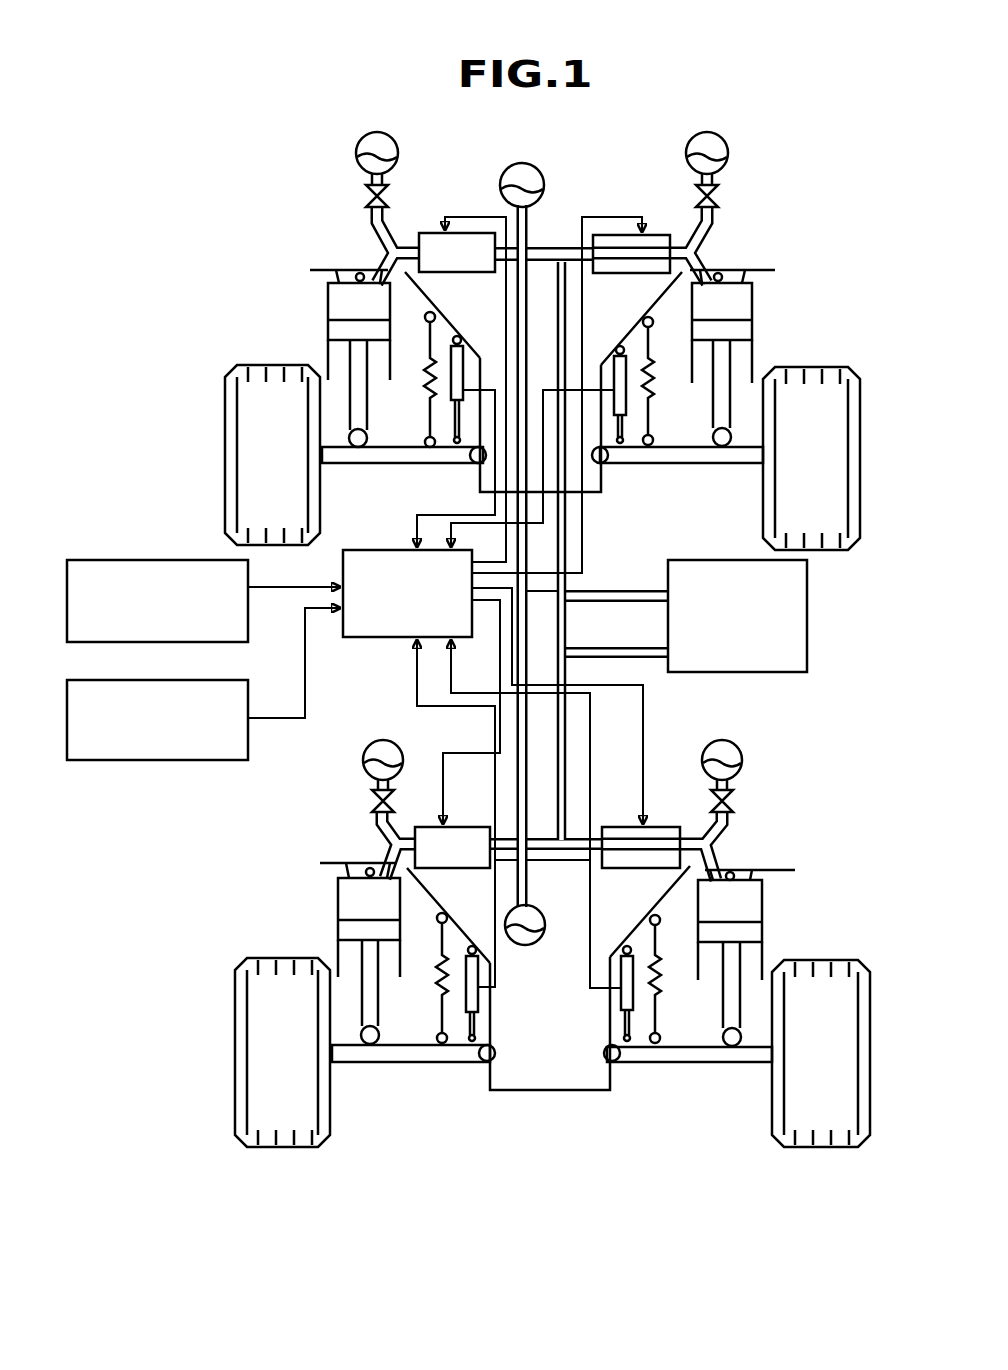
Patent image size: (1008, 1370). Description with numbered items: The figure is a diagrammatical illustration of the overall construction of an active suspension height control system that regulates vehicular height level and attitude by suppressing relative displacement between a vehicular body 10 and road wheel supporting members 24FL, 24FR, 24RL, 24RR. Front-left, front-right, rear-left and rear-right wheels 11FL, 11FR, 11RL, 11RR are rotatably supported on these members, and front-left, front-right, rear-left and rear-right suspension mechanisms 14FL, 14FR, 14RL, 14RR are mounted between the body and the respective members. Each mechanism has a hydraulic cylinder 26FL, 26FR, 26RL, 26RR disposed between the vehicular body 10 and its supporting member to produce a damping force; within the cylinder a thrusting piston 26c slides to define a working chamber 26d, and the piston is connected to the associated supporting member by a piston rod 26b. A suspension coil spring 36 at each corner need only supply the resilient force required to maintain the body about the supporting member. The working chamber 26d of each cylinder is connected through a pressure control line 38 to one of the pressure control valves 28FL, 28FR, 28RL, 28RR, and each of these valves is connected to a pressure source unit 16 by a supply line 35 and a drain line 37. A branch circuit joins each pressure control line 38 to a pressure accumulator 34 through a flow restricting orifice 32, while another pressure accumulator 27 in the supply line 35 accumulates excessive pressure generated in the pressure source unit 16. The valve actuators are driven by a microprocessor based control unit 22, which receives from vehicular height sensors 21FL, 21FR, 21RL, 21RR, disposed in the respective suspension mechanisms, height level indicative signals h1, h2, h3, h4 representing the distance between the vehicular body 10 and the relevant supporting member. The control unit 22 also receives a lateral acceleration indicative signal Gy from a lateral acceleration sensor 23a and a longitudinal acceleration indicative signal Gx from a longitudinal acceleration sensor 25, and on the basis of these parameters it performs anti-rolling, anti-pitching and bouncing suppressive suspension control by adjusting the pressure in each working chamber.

The vehicular body 10 is at (600, 493).
The front-left wheel 11FL is at (252, 433).
The front-right wheel 11FR is at (827, 413).
The rear-left wheel 11RL is at (258, 1030).
The rear-right wheel 11RR is at (832, 1105).
The front-left suspension mechanism 14FL is at (325, 300).
The front-right suspension mechanism 14FR is at (756, 302).
The rear-left suspension mechanism 14RL is at (335, 905).
The rear-right suspension mechanism 14RR is at (766, 912).
The pressure source unit 16 is at (810, 588).
The front-left vehicular height sensor 21FL is at (466, 358).
The front-right vehicular height sensor 21FR is at (600, 364).
The rear-left vehicular height sensor 21RL is at (480, 997).
The rear-right vehicular height sensor 21RR is at (614, 975).
The control unit 22 is at (377, 638).
The lateral acceleration sensor 23a is at (169, 558).
The front-left road wheel supporting member 24FL is at (417, 462).
The front-right road wheel supporting member 24FR is at (680, 466).
The rear-left road wheel supporting member 24RL is at (430, 1064).
The rear-right road wheel supporting member 24RR is at (670, 1064).
The longitudinal acceleration sensor 25 is at (191, 762).
The front-left hydraulic cylinder 26FL is at (330, 268).
The front-right hydraulic cylinder 26FR is at (742, 272).
The rear-left hydraulic cylinder 26RL is at (346, 868).
The rear-right hydraulic cylinder 26RR is at (752, 870).
The piston rod 26b is at (355, 412).
The thrusting piston 26c is at (330, 356).
The working chamber 26d is at (390, 312).
The pressure accumulator 27 is at (541, 163).
The front-left pressure control valve 28FL is at (433, 232).
The front-right pressure control valve 28FR is at (658, 230).
The rear-left pressure control valve 28RL is at (415, 826).
The rear-right pressure control valve 28RR is at (700, 808).
The orifice 32 is at (366, 198).
The pressure accumulator 34 is at (398, 142).
The supply line 35 is at (620, 591).
The suspension coil spring 36 is at (423, 383).
The drain line 37 is at (617, 653).
The pressure control line 38 is at (387, 257).
The front left height signal h1 is at (456, 468).
The front right height signal h2 is at (532, 471).
The rear left height signal h3 is at (456, 813).
The rear right height signal h4 is at (536, 814).
The lateral acceleration indicative signal Gy is at (294, 604).
The longitudinal acceleration indicative signal Gx is at (294, 663).